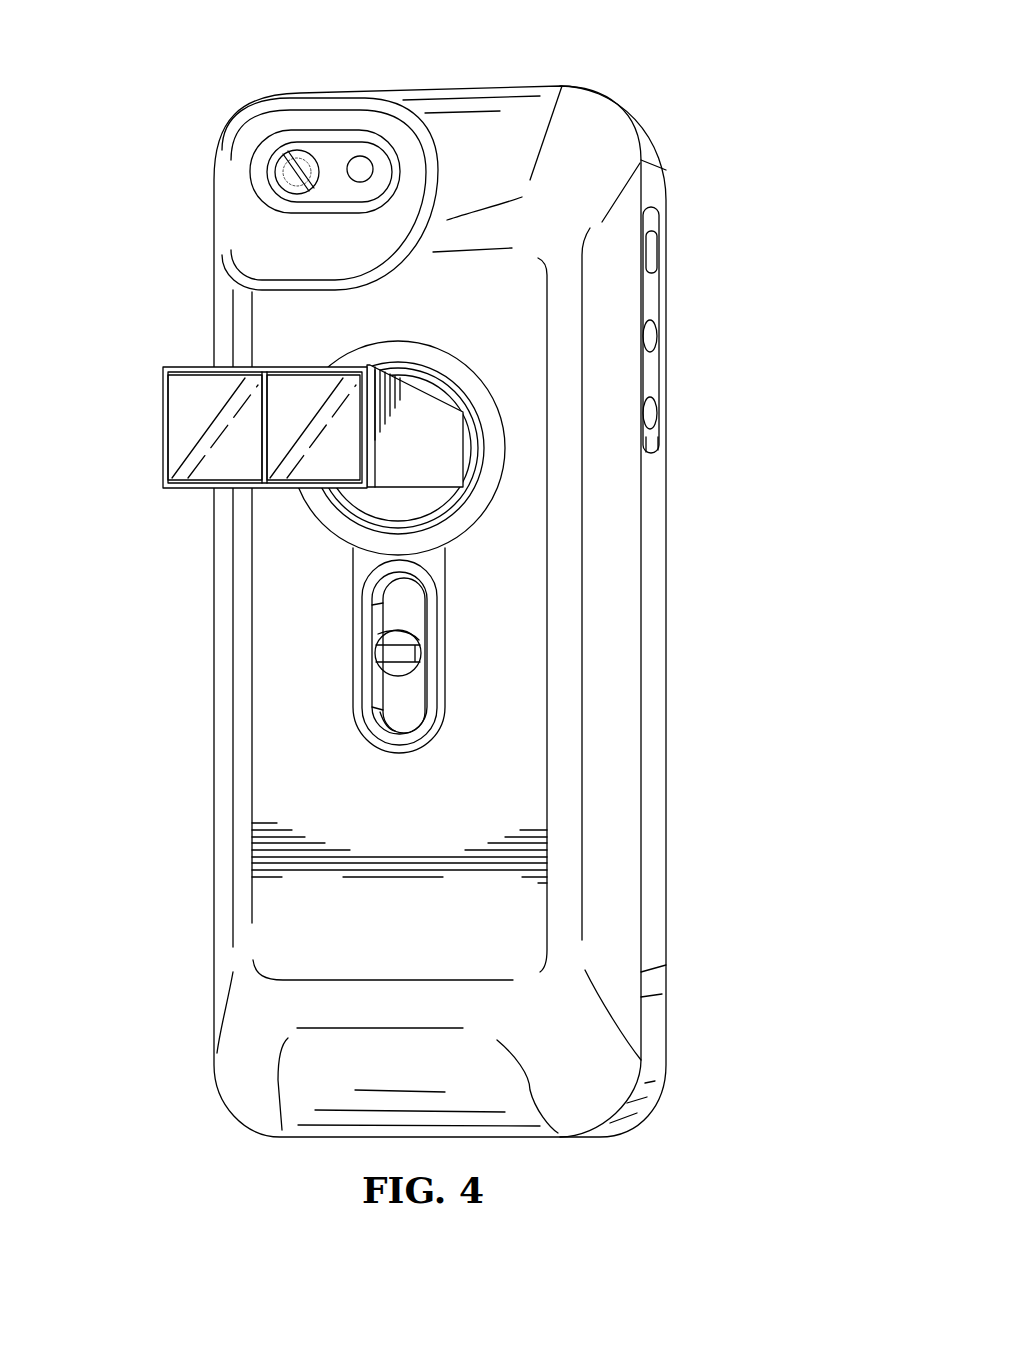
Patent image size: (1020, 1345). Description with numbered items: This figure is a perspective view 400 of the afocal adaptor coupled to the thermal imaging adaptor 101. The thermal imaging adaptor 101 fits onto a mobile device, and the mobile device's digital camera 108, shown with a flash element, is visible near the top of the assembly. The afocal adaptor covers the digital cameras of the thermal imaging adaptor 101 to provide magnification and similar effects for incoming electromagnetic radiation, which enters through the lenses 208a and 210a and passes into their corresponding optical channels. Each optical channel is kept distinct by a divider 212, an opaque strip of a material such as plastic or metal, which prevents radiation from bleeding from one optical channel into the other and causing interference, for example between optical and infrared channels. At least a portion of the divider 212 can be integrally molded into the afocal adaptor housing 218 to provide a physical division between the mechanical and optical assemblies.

The perspective view 400 is at (366, 573).
The thermal imaging adaptor 101 is at (213, 795).
The digital camera 108 is at (282, 184).
The lens 208a is at (178, 410).
The lens 210a is at (300, 397).
The divider 212 is at (262, 448).
The afocal adaptor housing 218 is at (428, 392).